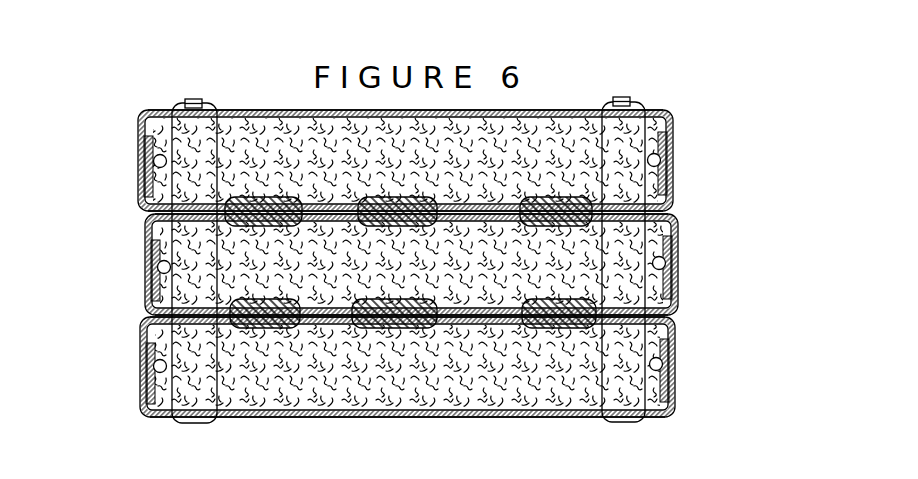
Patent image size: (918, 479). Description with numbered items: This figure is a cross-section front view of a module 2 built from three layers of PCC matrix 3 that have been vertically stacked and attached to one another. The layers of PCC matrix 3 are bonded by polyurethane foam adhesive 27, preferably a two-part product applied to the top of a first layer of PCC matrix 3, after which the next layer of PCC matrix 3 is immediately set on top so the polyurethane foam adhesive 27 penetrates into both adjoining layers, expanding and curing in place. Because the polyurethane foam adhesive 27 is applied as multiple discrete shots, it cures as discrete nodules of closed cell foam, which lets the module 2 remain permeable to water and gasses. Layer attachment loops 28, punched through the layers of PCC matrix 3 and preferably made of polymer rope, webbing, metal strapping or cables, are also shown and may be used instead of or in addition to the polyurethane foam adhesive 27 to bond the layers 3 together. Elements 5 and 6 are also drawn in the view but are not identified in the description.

The module 2 is at (131, 110).
The PCC matrix layer 3 is at (413, 241).
The top wall 5 is at (673, 108).
The bottom wall 6 is at (673, 205).
The polyurethane foam adhesive 27 is at (253, 197).
The layer attachment loops 28 is at (197, 425).